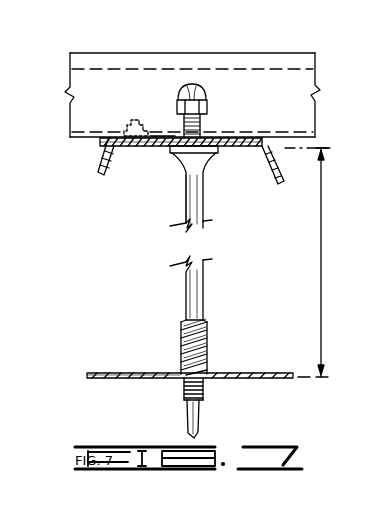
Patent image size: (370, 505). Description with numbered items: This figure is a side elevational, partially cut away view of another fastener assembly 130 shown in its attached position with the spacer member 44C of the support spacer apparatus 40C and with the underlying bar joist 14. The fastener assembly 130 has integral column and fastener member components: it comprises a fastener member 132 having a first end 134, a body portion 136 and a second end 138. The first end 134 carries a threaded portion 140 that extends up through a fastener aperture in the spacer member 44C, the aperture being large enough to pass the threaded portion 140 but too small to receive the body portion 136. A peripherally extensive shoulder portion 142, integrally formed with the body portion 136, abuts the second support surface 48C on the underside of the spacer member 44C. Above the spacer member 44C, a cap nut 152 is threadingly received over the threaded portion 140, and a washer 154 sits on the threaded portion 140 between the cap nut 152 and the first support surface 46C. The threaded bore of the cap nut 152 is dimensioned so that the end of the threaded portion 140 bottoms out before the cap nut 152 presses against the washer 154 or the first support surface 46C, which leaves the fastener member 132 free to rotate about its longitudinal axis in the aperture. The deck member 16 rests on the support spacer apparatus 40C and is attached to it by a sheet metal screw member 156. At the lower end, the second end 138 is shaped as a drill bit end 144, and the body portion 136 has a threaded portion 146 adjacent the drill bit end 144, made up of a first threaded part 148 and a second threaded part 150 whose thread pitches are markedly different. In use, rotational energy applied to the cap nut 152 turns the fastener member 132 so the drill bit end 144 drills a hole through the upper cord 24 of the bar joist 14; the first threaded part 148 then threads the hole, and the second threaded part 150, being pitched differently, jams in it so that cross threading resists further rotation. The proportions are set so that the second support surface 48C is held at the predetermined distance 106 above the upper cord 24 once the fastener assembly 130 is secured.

The deck member 16 is at (262, 65).
The sheet metal screw member 156 is at (133, 118).
The washer 154 is at (173, 133).
The spacer member 44C is at (242, 136).
The first support surface 46C is at (250, 136).
The support spacer apparatus 40C is at (96, 169).
The second support surface 48C is at (228, 152).
The cap nut 152 is at (208, 103).
The threaded portion 140 is at (206, 116).
The first end 134 is at (182, 172).
The fastener assembly 130 is at (182, 195).
The fastener member 132 is at (183, 222).
The shoulder portion 142 is at (218, 153).
The body portion 136 is at (197, 287).
The second threaded part 150 is at (204, 343).
The threaded portion 146 is at (182, 350).
The bar joist 14 is at (100, 381).
The upper cord 24 is at (102, 374).
The first threaded part 148 is at (205, 394).
The second end 138 is at (185, 408).
The drill bit end 144 is at (188, 435).
The predetermined distance 106 is at (318, 249).